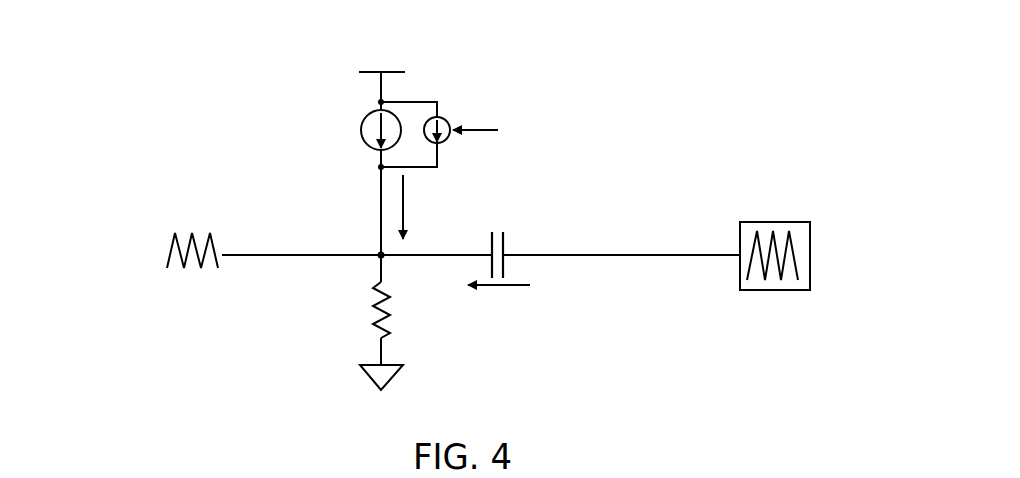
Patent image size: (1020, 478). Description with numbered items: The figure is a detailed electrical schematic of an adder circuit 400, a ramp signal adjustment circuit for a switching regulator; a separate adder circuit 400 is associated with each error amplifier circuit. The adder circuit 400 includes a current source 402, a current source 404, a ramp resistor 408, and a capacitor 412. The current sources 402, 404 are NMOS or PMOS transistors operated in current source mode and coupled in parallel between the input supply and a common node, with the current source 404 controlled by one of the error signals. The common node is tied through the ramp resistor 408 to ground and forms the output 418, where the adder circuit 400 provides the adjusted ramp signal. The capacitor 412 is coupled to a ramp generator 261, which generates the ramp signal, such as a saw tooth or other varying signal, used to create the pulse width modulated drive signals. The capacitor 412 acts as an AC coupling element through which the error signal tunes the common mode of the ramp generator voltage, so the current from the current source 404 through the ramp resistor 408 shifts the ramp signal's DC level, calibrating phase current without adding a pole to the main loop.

The adder circuit 400 is at (512, 198).
The current source 402 is at (363, 125).
The current source 404 is at (447, 138).
The ramp resistor 408 is at (390, 323).
The capacitor 412 is at (506, 247).
The output 418 is at (300, 255).
The ramp generator 261 is at (800, 222).